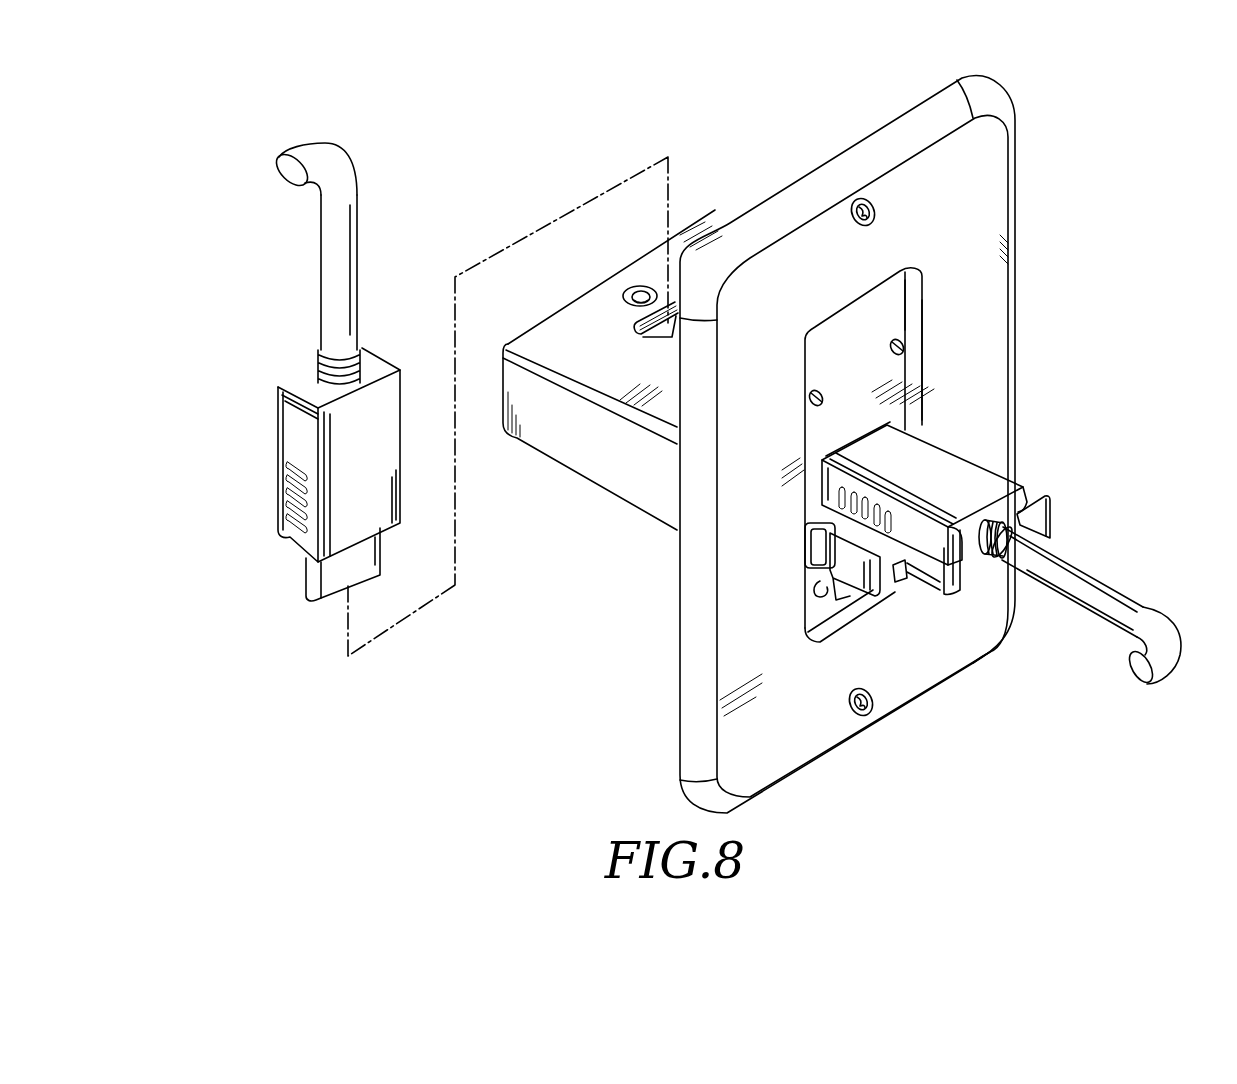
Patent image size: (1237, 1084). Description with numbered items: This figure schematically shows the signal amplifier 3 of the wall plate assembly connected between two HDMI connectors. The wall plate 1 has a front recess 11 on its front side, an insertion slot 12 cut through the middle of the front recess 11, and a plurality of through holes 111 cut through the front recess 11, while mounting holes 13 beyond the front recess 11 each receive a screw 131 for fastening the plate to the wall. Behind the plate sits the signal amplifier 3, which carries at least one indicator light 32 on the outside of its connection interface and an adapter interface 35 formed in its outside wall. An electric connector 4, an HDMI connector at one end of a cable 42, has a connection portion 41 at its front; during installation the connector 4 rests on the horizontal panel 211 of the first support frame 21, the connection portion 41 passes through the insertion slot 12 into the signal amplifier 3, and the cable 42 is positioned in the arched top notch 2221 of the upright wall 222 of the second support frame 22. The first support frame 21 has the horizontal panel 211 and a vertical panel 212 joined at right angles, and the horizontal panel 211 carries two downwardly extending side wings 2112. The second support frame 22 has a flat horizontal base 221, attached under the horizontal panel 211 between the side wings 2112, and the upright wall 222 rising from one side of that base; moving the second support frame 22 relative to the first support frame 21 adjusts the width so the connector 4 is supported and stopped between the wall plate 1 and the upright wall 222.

The wall plate 1 is at (1022, 237).
The front recess 11 is at (893, 298).
The through holes 111 is at (905, 338).
The insertion slot 12 is at (882, 427).
The mounting holes 13 is at (876, 208).
The screw 131 is at (876, 223).
The signal amplifier 3 is at (559, 466).
The indicator light 32 is at (903, 352).
The adapter interface 35 is at (637, 328).
The electric connector 4 is at (270, 434).
The connection portion 41 is at (311, 573).
The cable 42 is at (332, 316).
The first support frame 21 is at (797, 543).
The horizontal panel 211 is at (840, 520).
The vertical panel 212 is at (827, 579).
The side wings 2112 is at (843, 588).
The second support frame 22 is at (1060, 502).
The flat horizontal base 221 is at (913, 586).
The upright wall 222 is at (1045, 522).
The arched top notch 2221 is at (983, 553).